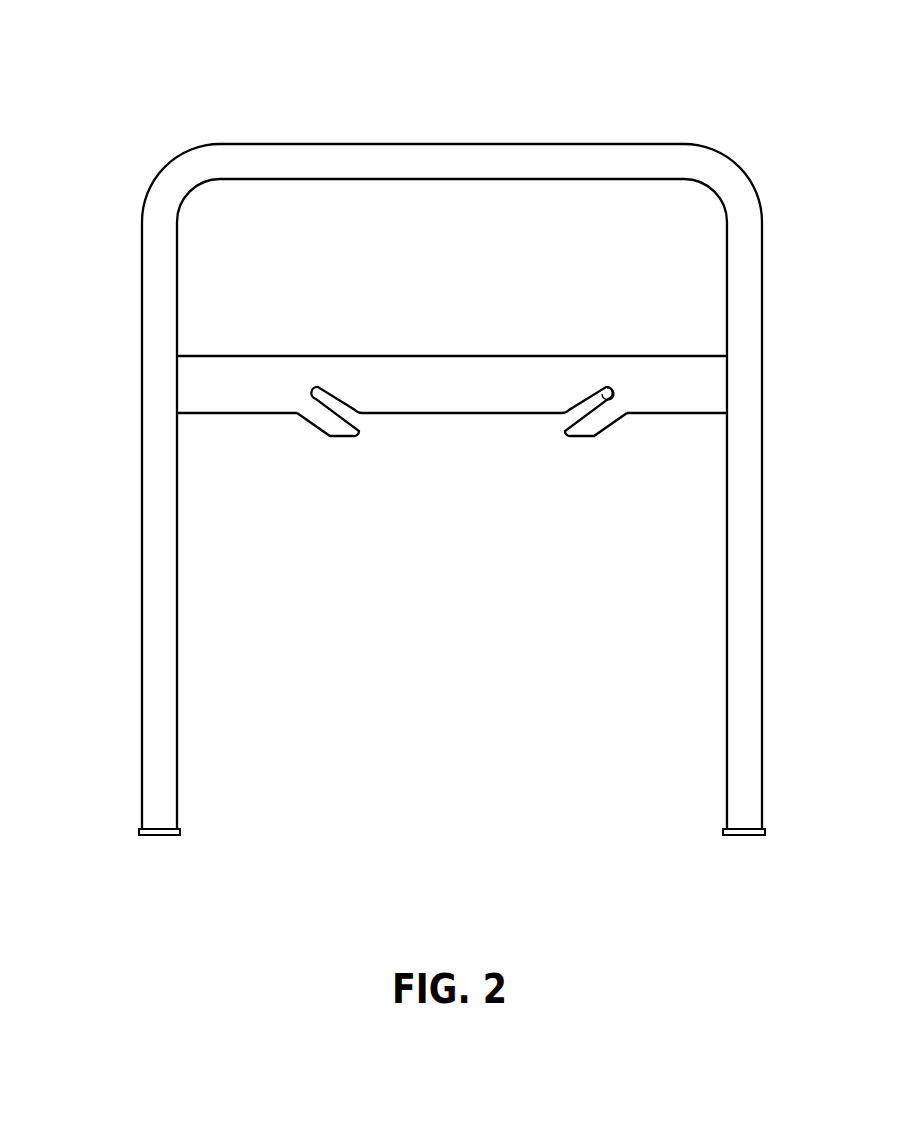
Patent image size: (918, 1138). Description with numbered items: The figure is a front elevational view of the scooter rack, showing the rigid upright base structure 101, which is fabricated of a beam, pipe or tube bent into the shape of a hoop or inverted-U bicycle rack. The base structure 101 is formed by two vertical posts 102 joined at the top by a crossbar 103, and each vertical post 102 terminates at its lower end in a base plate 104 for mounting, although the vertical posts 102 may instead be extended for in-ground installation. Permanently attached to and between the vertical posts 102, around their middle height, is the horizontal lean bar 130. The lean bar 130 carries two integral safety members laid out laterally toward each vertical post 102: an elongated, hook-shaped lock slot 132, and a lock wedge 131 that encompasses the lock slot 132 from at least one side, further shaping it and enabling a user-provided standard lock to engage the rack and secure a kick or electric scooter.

The base structure 101 is at (159, 166).
The vertical posts 102 is at (755, 614).
The crossbar 103 is at (457, 152).
The base plates 104 is at (147, 833).
The horizontal lean bar 130 is at (358, 355).
The lock wedge 131 is at (583, 430).
The lock slot 132 is at (602, 398).